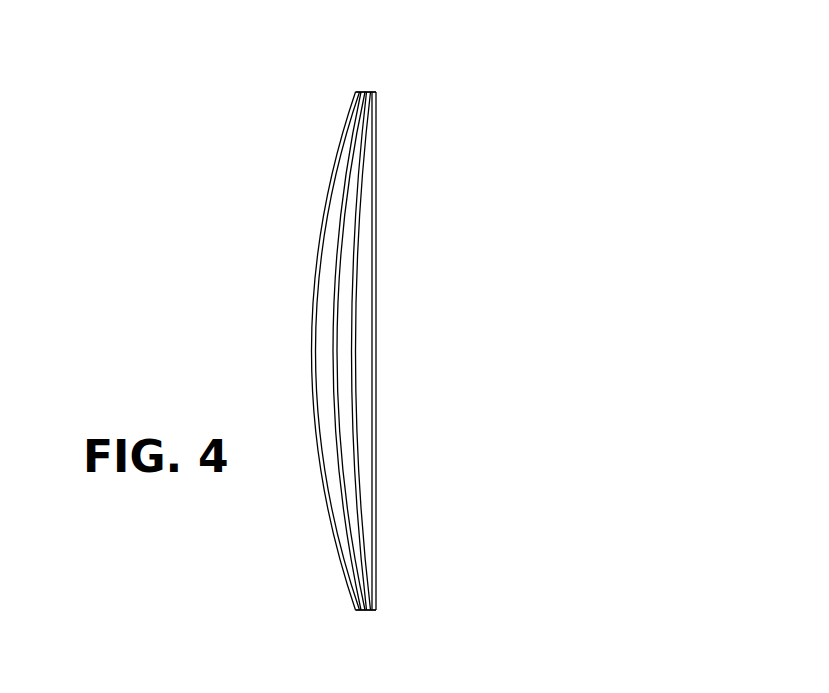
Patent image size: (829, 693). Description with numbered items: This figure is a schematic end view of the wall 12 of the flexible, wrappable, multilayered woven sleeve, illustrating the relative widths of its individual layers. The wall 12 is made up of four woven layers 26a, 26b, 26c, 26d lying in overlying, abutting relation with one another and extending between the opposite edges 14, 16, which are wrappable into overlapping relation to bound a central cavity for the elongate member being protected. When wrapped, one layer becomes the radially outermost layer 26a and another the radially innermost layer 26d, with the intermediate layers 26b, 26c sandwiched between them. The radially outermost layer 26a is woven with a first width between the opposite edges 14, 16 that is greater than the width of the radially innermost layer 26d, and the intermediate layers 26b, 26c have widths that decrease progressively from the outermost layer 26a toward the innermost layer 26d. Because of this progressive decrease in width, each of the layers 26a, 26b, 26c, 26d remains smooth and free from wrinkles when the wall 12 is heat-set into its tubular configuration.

The wall 12 is at (345, 111).
The opposite edge 14 is at (377, 92).
The opposite edge 16 is at (377, 610).
The radially outermost layer 26a is at (332, 187).
The intermediate layer 26b is at (338, 224).
The intermediate layer 26c is at (353, 259).
The radially innermost layer 26d is at (372, 300).